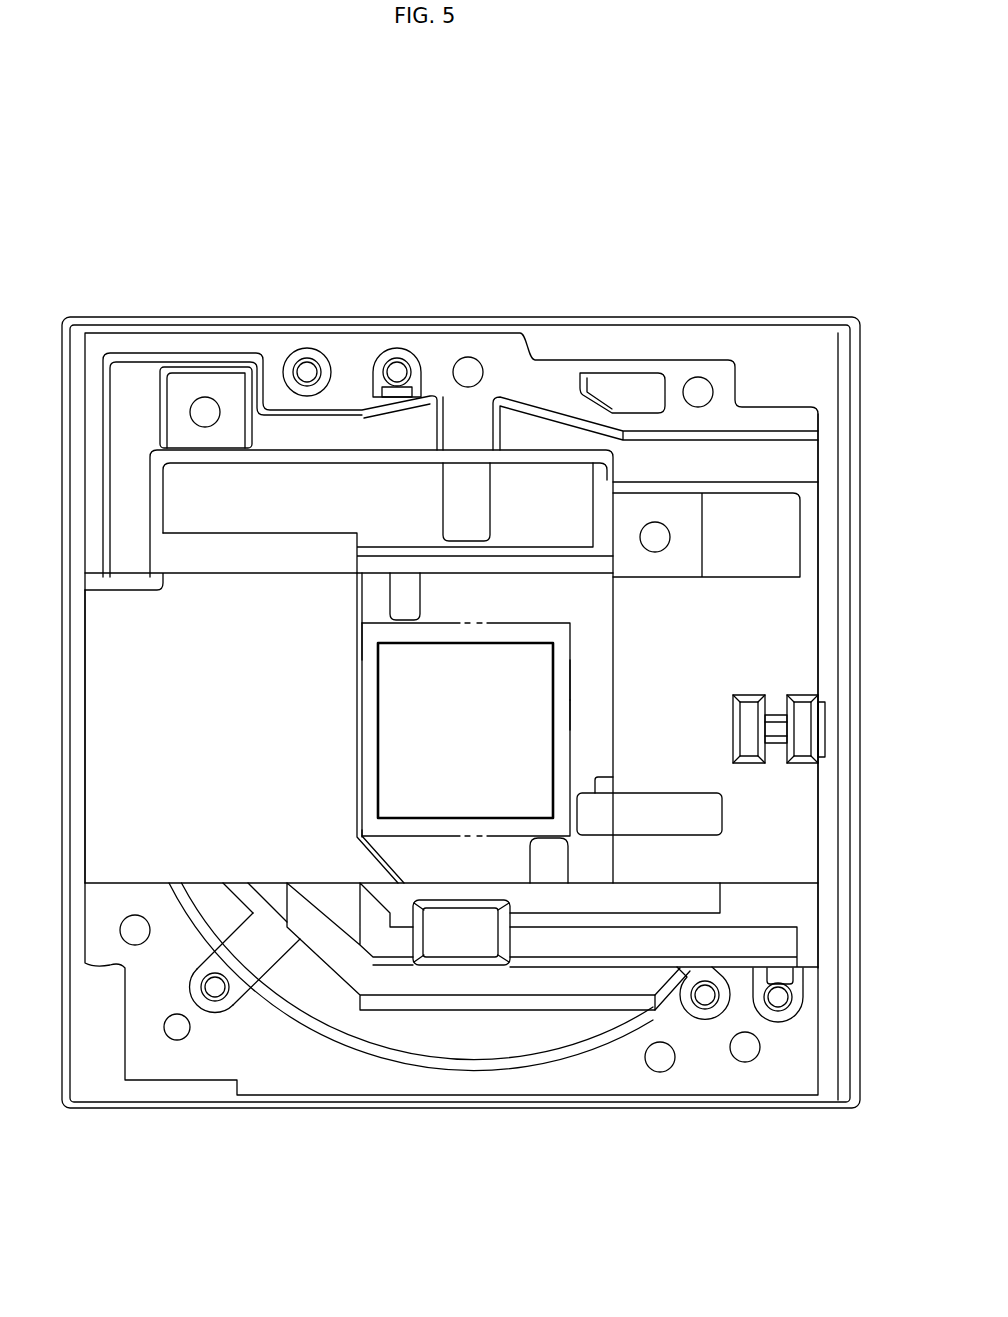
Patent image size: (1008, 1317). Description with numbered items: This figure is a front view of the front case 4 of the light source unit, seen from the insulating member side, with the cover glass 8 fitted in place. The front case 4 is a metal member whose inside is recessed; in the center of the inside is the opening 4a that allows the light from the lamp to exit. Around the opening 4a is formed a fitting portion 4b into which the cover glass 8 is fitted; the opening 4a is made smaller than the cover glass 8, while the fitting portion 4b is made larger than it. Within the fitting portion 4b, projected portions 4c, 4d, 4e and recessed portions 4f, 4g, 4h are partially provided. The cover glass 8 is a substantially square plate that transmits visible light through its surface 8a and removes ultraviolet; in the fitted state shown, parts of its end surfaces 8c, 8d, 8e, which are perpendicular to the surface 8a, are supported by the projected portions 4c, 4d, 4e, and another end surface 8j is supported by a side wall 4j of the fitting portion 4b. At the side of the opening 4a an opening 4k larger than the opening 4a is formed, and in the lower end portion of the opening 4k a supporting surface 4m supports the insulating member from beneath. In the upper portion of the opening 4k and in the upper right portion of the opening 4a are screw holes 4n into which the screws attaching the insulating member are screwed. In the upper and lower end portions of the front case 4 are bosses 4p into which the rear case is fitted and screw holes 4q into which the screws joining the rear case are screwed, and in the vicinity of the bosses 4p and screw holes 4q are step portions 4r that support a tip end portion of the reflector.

The front case 4 is at (560, 320).
The opening 4a is at (558, 675).
The fitting portion 4b is at (588, 610).
The projected portion 4c is at (390, 593).
The projected portion 4d is at (613, 777).
The projected portion 4e is at (568, 852).
The recessed portion 4f is at (588, 742).
The recessed portion 4g is at (590, 875).
The recessed portion 4h is at (438, 863).
The side wall 4j is at (380, 641).
The opening 4k is at (238, 602).
The supporting surface 4m is at (200, 883).
The screw hole 4n is at (205, 410).
The boss 4p is at (307, 372).
The screw hole 4q is at (468, 372).
The step portion 4r is at (418, 422).
The cover glass 8 is at (522, 623).
The surface 8a is at (418, 753).
The end surface 8c is at (452, 623).
The end surface 8d is at (575, 705).
The end surface 8e is at (390, 837).
The end surface 8j is at (360, 694).